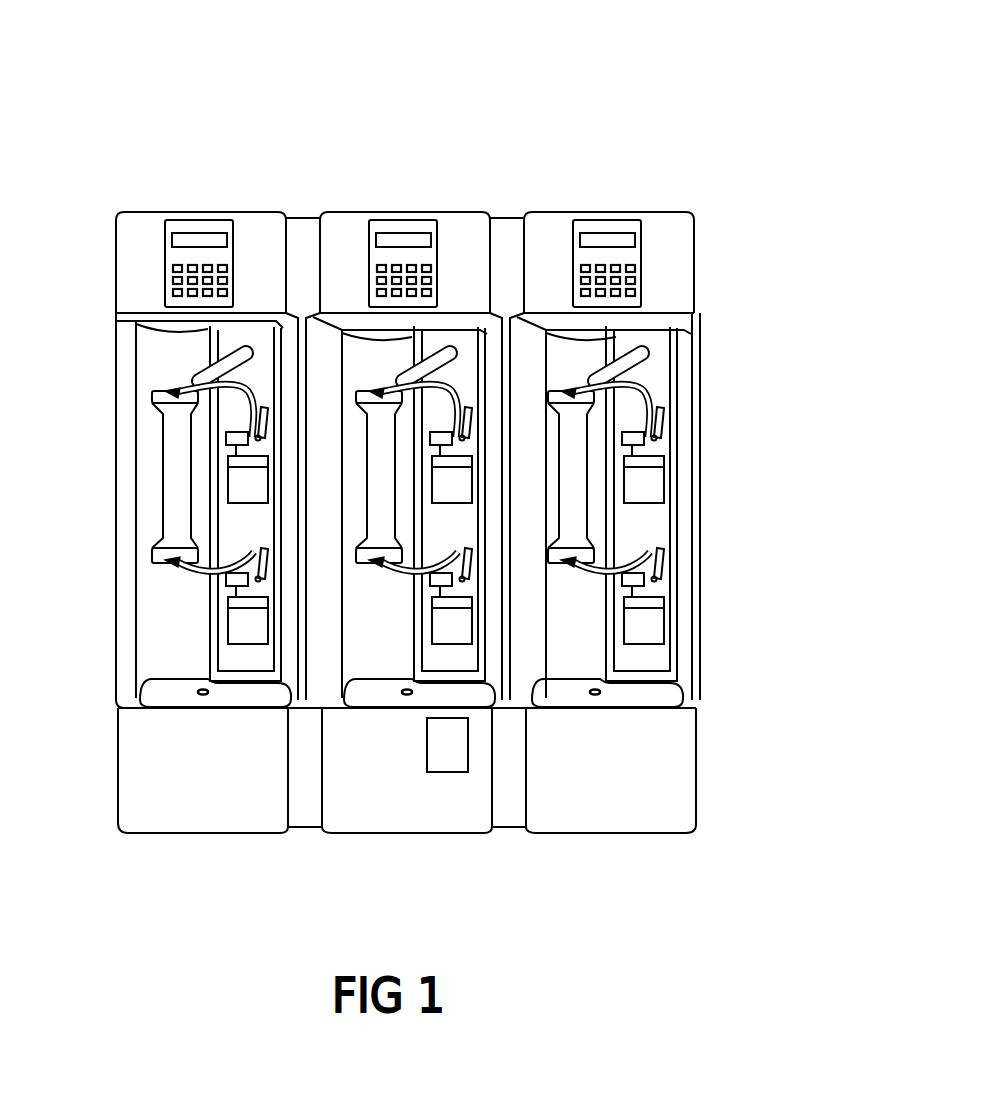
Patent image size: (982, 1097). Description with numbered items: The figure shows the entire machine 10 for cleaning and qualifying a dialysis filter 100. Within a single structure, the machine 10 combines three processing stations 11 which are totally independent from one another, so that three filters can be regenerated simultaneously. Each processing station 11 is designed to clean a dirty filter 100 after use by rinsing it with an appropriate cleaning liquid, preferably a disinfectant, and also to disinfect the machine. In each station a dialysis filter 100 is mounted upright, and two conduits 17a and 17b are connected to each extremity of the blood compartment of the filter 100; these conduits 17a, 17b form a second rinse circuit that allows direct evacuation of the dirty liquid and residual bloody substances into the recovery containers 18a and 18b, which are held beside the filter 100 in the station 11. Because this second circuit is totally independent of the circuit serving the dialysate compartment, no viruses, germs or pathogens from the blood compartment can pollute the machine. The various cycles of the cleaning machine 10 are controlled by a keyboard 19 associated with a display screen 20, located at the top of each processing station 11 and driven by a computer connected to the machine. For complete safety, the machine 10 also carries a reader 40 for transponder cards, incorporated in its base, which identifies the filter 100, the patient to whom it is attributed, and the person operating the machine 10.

The machine 10 is at (696, 127).
The processing station 11 is at (181, 196).
The display screen 20 is at (182, 225).
The keyboard 19 is at (167, 278).
The conduit 17a is at (173, 393).
The conduit 17b is at (173, 562).
The recovery container 18a is at (242, 483).
The recovery container 18b is at (240, 627).
The dialysis filter 100 is at (172, 482).
The reader 40 is at (452, 745).